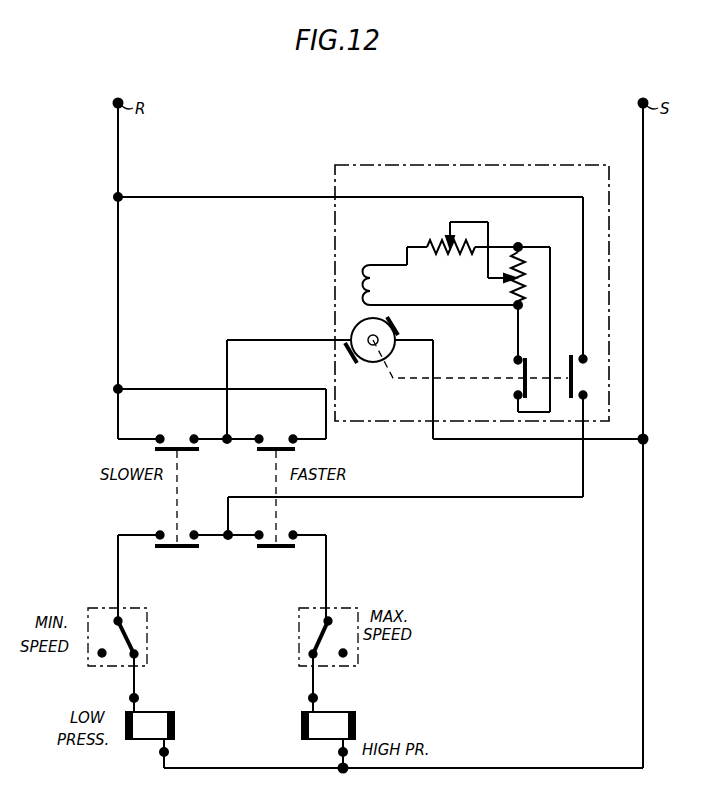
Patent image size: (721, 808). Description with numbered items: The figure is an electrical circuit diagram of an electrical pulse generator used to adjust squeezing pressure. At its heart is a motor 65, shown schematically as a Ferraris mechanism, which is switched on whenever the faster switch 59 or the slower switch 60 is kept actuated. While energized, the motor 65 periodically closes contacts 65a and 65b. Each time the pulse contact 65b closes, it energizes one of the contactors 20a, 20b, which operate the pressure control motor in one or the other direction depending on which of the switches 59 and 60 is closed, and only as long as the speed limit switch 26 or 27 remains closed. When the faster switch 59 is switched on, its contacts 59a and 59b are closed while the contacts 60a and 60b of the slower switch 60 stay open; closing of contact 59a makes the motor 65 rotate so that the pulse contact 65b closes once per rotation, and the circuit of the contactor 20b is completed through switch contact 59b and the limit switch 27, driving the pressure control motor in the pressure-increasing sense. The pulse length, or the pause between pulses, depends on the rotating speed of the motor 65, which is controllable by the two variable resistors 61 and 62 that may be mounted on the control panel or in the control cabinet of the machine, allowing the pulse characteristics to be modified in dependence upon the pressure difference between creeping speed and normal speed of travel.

The contactor 20a is at (156, 725).
The contactor 20b is at (340, 725).
The speed limit switch 26 is at (138, 622).
The speed limit switch 27 is at (308, 640).
The faster switch 59 is at (316, 525).
The contact of faster switch 59a is at (262, 452).
The contact of faster switch 59b is at (276, 549).
The slower switch 60 is at (138, 510).
The contact of slower switch 60a is at (172, 443).
The contact of slower switch 60b is at (177, 549).
The variable resistor 61 is at (449, 258).
The variable resistor 62 is at (526, 278).
The motor 65 is at (370, 365).
The contact 65a is at (527, 359).
The pulse contact 65b is at (574, 370).